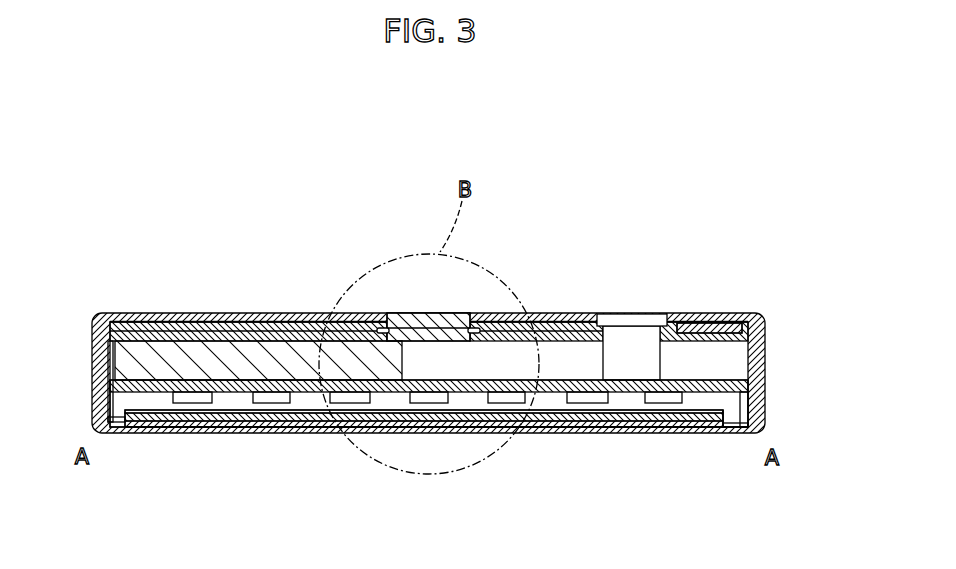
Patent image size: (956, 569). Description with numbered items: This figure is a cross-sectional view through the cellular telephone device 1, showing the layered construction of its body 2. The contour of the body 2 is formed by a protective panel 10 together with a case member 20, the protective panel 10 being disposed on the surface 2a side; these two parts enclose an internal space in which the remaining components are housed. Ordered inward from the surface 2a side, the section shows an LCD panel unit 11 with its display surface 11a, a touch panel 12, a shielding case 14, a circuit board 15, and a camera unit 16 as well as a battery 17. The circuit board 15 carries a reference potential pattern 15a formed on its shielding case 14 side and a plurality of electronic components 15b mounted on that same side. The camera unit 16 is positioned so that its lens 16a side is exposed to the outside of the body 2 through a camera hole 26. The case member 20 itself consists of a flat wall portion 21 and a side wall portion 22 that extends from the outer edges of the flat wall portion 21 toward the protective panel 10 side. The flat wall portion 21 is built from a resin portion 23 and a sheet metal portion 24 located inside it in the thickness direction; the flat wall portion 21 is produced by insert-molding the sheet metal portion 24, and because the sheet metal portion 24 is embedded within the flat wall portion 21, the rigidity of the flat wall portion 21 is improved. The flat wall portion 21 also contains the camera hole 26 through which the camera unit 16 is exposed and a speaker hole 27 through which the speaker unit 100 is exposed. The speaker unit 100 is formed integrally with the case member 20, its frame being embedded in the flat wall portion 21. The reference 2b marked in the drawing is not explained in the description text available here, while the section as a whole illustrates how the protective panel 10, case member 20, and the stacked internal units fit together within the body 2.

The cellular telephone device 1 is at (740, 160).
The body 2 is at (766, 312).
The surface 2a is at (743, 435).
The upper housing 2b is at (750, 313).
The protective panel 10 is at (576, 435).
The LCD panel unit 11 is at (635, 432).
The display surface 11a is at (610, 435).
The touch panel 12 is at (545, 435).
The shielding case 14 is at (722, 435).
The circuit board 15 is at (748, 385).
The reference potential pattern 15a is at (748, 405).
The electronic components 15b is at (665, 404).
The camera unit 16 is at (638, 350).
The lens 16a is at (620, 314).
The battery 17 is at (183, 352).
The case member 20 is at (772, 388).
The flat wall portion 21 is at (542, 320).
The side wall portion 22 is at (92, 360).
The resin portion 23 is at (697, 322).
The sheet metal portion 24 is at (733, 314).
The camera hole 26 is at (597, 320).
The speaker hole 27 is at (388, 322).
The speaker unit 100 is at (456, 309).